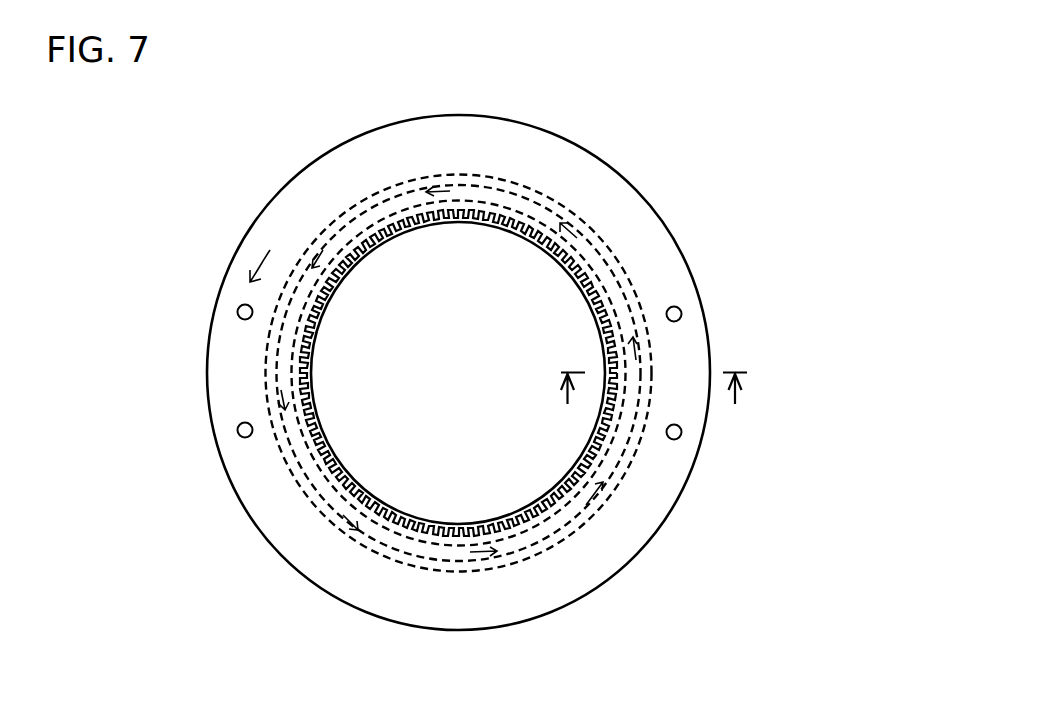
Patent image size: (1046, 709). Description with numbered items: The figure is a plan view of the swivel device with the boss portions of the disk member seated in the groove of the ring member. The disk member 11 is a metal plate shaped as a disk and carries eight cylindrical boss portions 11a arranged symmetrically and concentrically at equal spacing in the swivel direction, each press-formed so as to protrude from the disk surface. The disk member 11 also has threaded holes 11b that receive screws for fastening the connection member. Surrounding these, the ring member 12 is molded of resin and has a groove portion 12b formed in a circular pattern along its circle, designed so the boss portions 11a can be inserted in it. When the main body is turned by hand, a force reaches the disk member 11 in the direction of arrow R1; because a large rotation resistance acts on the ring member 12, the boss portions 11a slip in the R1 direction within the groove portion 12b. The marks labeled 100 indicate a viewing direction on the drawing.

The disk member 11 is at (522, 118).
The boss portions 11a is at (336, 245).
The threaded holes 11b is at (238, 311).
The ring member 12 is at (633, 283).
The groove portion 12b is at (628, 476).
The viewing direction indicator 100 is at (652, 407).
The arrow R1 direction R1 is at (272, 251).